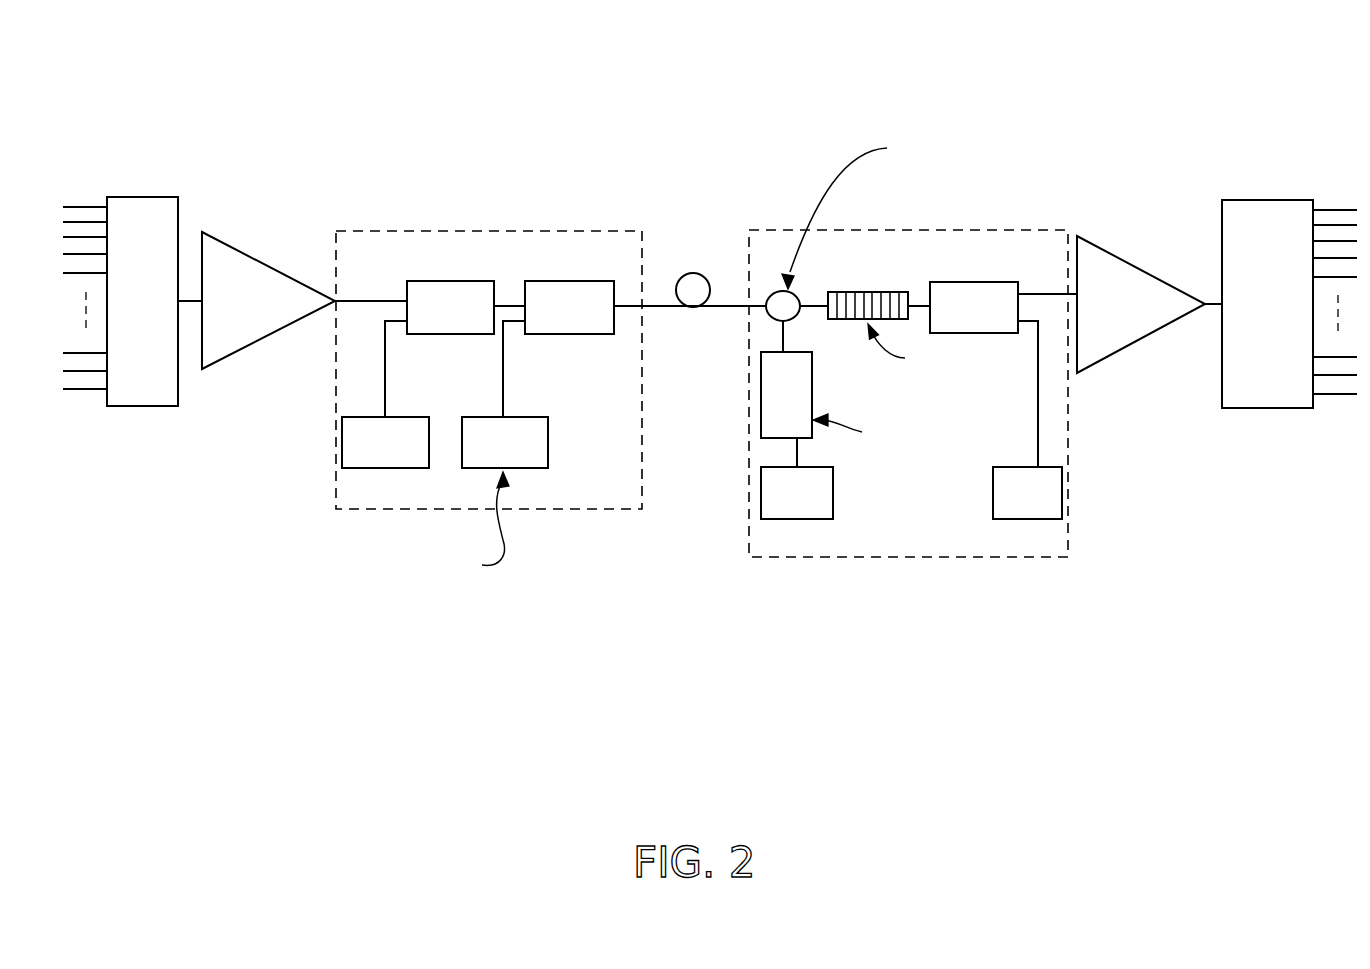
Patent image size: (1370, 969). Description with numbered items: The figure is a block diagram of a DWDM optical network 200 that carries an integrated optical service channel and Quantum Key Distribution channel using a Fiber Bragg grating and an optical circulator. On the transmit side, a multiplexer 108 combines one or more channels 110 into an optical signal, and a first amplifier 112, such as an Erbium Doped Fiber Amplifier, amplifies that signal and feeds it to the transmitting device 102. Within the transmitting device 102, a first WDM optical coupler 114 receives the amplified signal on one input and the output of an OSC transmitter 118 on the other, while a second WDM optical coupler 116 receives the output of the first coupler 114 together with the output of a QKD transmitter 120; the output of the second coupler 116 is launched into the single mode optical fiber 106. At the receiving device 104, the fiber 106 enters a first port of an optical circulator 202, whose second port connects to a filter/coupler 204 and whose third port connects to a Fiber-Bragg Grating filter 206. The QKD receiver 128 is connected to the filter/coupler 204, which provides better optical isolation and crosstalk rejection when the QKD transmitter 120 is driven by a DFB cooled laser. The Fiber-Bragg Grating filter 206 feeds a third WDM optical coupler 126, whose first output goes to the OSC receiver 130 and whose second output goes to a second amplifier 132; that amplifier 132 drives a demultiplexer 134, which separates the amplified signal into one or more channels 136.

The DWDM optical network 200 is at (710, 302).
The transmitting device 102 is at (477, 230).
The receiving device 104 is at (942, 230).
The single mode optical fiber 106 is at (718, 278).
The multiplexer 108 is at (142, 195).
The channels 110 is at (76, 188).
The first amplifier 112 is at (233, 243).
The first WDM optical coupler 114 is at (470, 281).
The second WDM optical coupler 116 is at (603, 281).
The OSC transmitter 118 is at (393, 468).
The QKD transmitter 120 is at (523, 468).
The third WDM optical coupler 126 is at (971, 282).
The QKD receiver 128 is at (798, 519).
The OSC receiver 130 is at (1033, 519).
The second amplifier 132 is at (1106, 248).
The demultiplexer 134 is at (1265, 200).
The channels 136 is at (1332, 417).
The optical circulator 202 is at (772, 320).
The filter/coupler 204 is at (812, 368).
The Fiber-Bragg Grating filter 206 is at (888, 292).